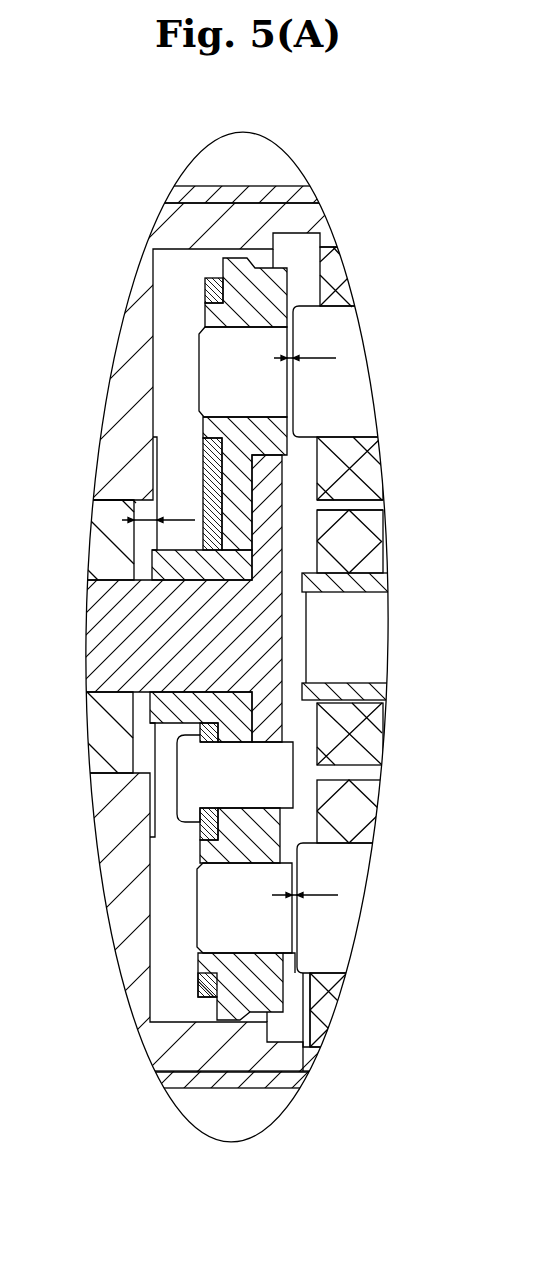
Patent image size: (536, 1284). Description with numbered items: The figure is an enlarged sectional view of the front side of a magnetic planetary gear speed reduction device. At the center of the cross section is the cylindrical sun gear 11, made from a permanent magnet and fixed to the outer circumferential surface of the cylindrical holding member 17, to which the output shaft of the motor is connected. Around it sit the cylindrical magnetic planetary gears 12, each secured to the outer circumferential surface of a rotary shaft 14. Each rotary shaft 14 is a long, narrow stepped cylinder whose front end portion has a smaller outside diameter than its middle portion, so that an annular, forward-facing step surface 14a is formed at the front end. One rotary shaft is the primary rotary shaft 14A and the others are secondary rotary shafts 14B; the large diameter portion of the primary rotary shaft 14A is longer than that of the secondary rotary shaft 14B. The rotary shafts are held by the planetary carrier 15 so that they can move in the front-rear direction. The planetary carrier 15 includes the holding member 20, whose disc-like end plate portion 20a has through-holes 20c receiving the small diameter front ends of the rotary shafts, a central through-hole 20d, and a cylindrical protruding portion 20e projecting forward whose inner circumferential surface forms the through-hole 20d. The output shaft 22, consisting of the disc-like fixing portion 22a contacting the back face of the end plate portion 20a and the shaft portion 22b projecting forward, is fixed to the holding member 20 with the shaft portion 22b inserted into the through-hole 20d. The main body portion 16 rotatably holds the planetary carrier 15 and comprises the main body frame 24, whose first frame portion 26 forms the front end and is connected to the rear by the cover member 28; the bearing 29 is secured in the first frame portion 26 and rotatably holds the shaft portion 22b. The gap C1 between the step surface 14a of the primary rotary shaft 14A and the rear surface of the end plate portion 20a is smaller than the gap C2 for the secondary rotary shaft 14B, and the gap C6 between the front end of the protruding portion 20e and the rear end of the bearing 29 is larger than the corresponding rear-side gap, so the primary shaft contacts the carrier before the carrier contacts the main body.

The main body portion 16 is at (230, 609).
The first frame portion 26 is at (172, 182).
The main body frame 24 is at (230, 306).
The cover member 28 is at (294, 183).
The output shaft 22 is at (223, 592).
The fixing portion 22a is at (223, 592).
The shaft portion 22b is at (107, 693).
The bearing 29 is at (93, 498).
The planetary gear 12 is at (371, 619).
The sun gear 11 is at (360, 510).
The holding member 17 is at (363, 572).
The rotary shaft 14 is at (364, 644).
The primary rotary shaft 14A is at (343, 307).
The secondary rotary shaft 14B is at (330, 973).
The step surface 14a is at (272, 326).
The holding member 20 is at (197, 585).
The end plate portion 20a is at (226, 239).
The planetary carrier 15 is at (198, 322).
The through-hole 20c is at (233, 416).
The through-hole 20d is at (216, 576).
The protruding portion 20e is at (128, 563).
The gap C1 is at (305, 349).
The gap C2 is at (305, 885).
The gap C6 is at (158, 510).